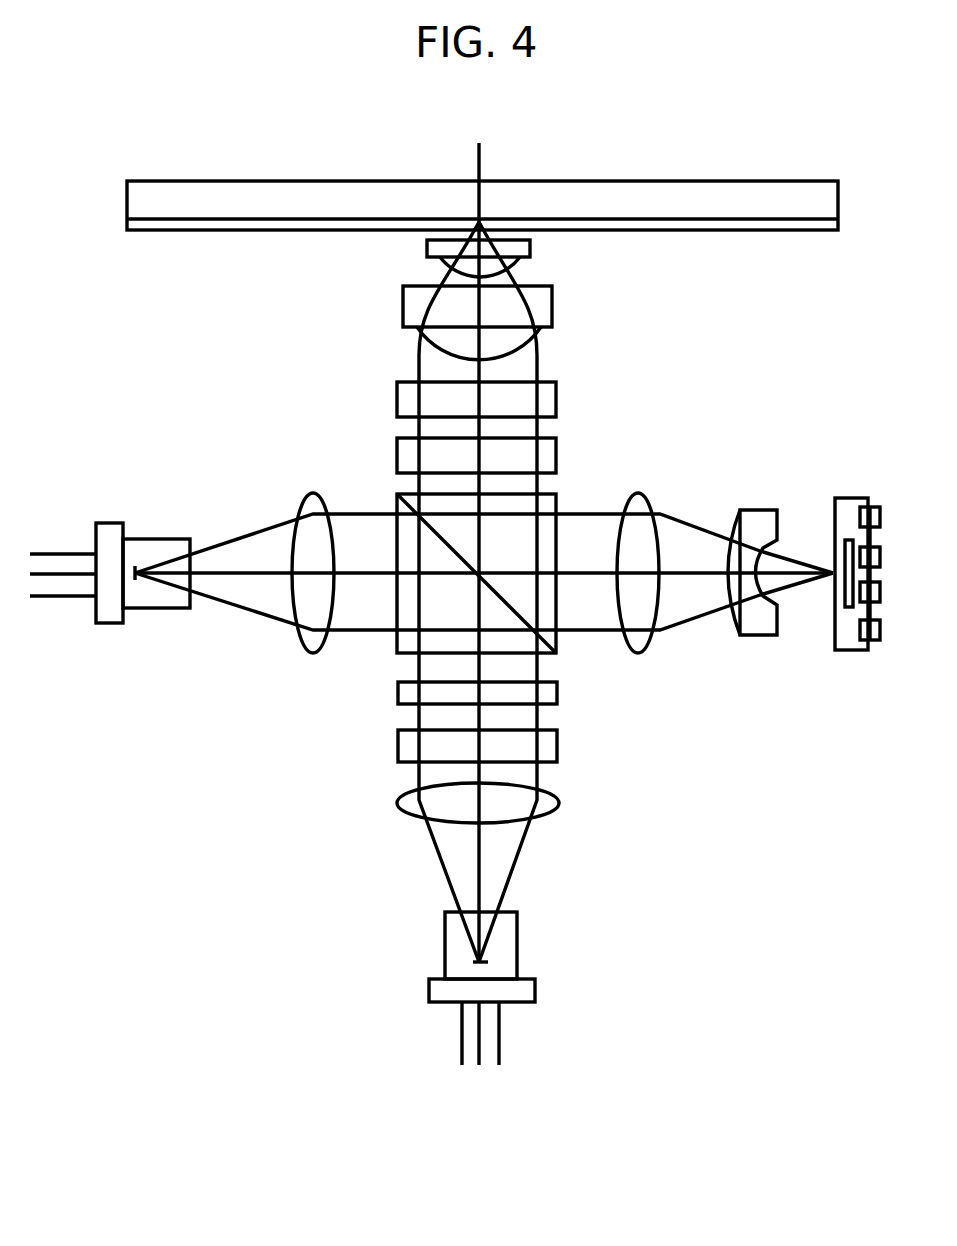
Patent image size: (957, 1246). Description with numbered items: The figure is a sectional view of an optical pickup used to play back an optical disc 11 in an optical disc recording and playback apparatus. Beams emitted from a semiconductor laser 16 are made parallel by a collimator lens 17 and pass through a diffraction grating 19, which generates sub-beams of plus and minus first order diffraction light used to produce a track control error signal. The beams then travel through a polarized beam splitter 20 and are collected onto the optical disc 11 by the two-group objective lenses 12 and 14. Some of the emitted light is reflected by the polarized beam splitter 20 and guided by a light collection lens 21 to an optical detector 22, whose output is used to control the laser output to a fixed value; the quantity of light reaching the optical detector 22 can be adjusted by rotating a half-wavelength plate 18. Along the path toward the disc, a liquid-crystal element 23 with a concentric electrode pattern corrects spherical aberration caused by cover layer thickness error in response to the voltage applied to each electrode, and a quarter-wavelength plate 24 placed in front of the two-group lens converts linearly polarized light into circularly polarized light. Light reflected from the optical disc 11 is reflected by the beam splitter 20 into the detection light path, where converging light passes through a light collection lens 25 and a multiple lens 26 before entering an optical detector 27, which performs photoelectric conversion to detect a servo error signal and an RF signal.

The optical disc 11 is at (205, 195).
The objective lens 12 is at (530, 248).
The objective lens 14 is at (552, 308).
The semiconductor laser 16 is at (517, 940).
The collimator lens 17 is at (537, 807).
The half-wavelength plate 18 is at (397, 748).
The diffraction grating 19 is at (397, 700).
The polarized beam splitter 20 is at (556, 653).
The light collection lens 21 is at (307, 497).
The optical detector 22 is at (108, 613).
The liquid-crystal element 23 is at (556, 460).
The quarter-wavelength plate 24 is at (556, 395).
The light collection lens 25 is at (655, 633).
The multiple lens 26 is at (753, 628).
The optical detector 27 is at (852, 638).